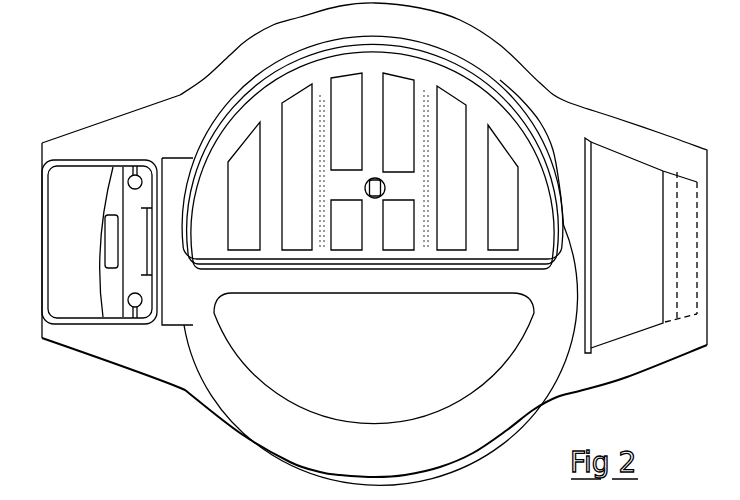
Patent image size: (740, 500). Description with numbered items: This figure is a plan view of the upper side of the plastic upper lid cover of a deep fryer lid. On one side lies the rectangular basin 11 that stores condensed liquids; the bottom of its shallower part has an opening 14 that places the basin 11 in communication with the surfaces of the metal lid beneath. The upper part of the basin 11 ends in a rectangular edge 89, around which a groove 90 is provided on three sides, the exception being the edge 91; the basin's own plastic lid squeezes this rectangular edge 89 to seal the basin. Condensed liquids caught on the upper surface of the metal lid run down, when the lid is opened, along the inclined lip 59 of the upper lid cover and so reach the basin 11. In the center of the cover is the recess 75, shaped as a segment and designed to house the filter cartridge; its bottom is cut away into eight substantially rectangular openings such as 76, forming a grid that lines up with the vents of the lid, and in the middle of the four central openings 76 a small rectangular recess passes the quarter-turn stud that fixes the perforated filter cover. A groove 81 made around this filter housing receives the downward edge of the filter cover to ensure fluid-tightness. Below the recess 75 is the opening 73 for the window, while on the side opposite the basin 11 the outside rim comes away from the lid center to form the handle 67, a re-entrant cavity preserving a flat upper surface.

The basin 11 is at (83, 208).
The opening 14 is at (109, 222).
The inclined lip 59 is at (144, 254).
The handle 67 is at (637, 258).
The opening 73 is at (385, 359).
The recess 75 is at (489, 108).
The opening 76 is at (348, 83).
The groove 81 is at (190, 202).
The rectangular edge 89 is at (80, 317).
The groove 90 is at (71, 162).
The edge 91 is at (46, 245).